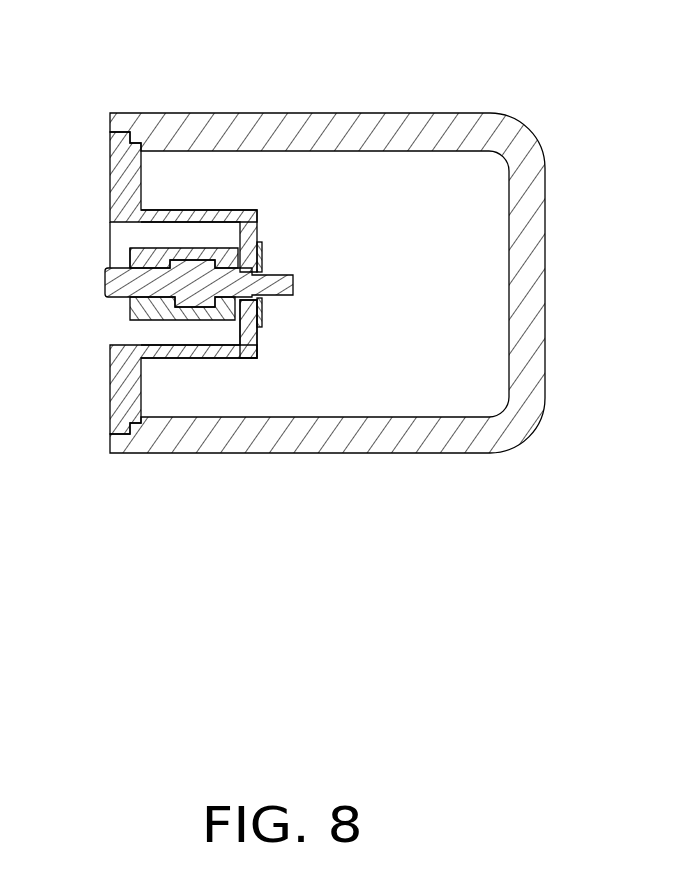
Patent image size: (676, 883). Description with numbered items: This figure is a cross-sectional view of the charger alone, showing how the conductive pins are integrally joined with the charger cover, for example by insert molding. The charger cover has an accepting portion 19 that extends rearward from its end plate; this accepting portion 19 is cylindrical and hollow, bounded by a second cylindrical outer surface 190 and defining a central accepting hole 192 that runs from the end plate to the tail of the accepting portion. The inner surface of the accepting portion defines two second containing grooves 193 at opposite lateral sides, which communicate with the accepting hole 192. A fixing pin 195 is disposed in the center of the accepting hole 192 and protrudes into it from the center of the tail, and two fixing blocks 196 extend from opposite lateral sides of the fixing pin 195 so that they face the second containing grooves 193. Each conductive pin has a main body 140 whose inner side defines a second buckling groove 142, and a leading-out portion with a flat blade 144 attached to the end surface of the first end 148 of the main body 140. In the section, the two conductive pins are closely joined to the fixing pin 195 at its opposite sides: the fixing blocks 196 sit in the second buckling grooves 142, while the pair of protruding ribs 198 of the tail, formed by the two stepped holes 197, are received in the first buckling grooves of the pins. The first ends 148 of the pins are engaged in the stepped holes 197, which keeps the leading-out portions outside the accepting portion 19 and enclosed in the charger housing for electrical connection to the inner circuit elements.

The accepting portion 19 is at (222, 186).
The second cylindrical outer surface 190 is at (167, 210).
The second containing grooves 193 is at (197, 225).
The accepting hole 192 is at (118, 251).
The second buckling groove 142 is at (199, 260).
The stepped holes 197 is at (249, 210).
The fixing pin 195 is at (252, 286).
The main body 140 is at (130, 318).
The flat blade 144 is at (262, 307).
The fixing blocks 196 is at (187, 300).
The protruding ribs 198 is at (240, 335).
The first end 148 is at (255, 315).